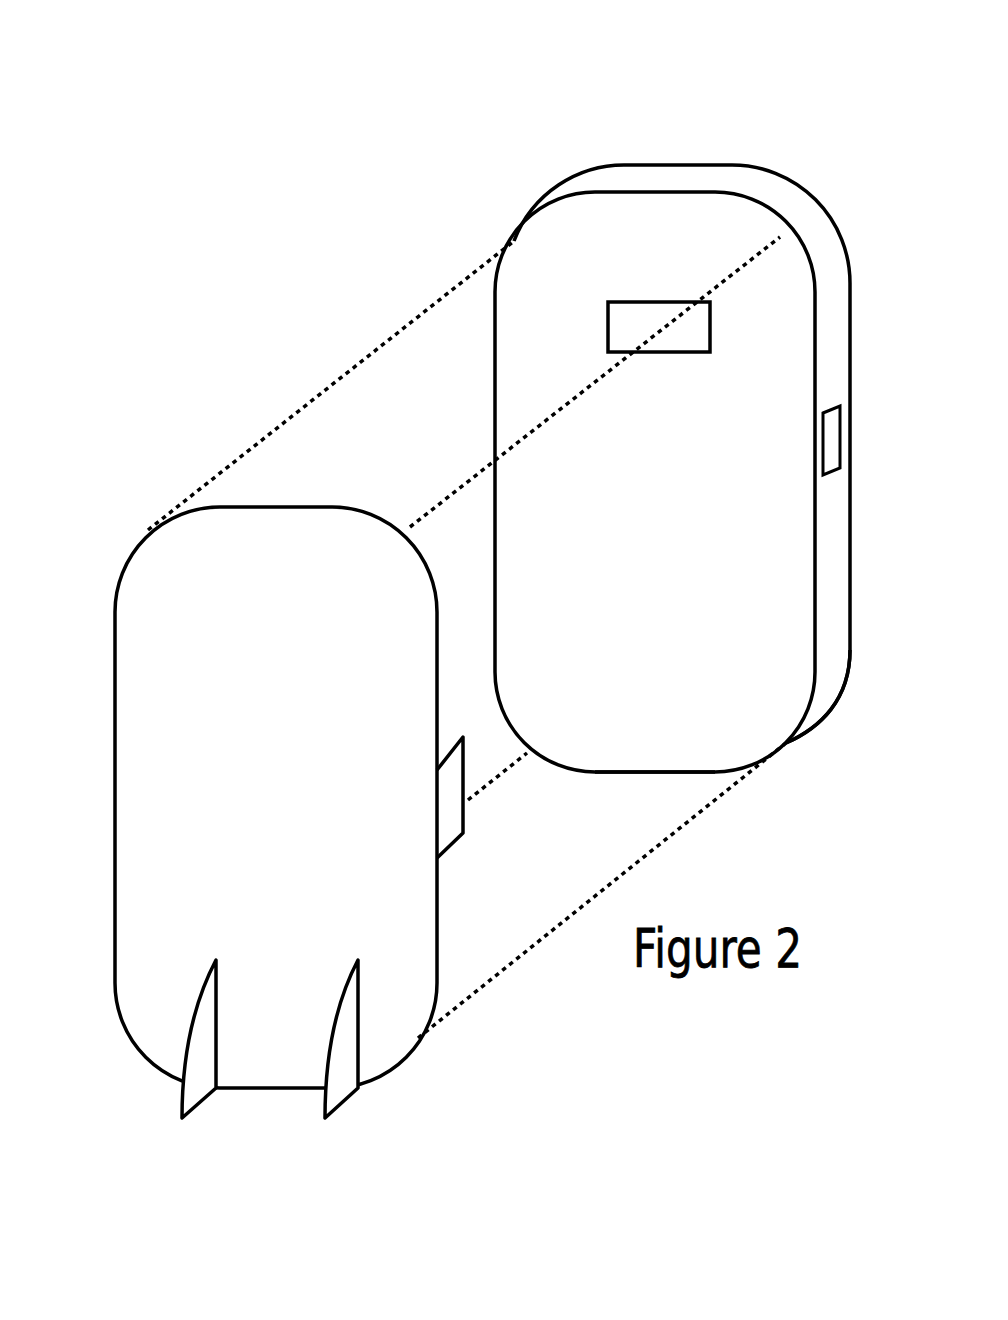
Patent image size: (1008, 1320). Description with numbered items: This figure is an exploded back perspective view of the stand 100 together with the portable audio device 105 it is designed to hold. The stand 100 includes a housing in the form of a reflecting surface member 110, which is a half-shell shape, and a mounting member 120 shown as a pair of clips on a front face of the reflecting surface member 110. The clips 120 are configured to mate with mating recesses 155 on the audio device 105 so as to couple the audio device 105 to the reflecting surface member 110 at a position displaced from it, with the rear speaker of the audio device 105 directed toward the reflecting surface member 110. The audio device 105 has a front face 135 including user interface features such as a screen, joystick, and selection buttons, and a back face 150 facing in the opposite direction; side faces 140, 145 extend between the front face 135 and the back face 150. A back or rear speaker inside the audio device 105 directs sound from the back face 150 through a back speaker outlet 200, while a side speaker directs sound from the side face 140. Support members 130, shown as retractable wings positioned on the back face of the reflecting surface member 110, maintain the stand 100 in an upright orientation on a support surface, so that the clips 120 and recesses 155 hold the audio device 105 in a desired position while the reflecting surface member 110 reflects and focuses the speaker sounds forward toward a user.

The stand 100 is at (283, 806).
The audio device 105 is at (668, 434).
The reflecting surface member 110 is at (115, 803).
The mounting member 120 is at (450, 828).
The support members 130 is at (203, 1102).
The front face 135 is at (835, 205).
The side face 140 is at (495, 327).
The side face 145 is at (830, 667).
The back face 150 is at (642, 720).
The mating recesses 155 is at (830, 442).
The back speaker outlet 200 is at (682, 333).